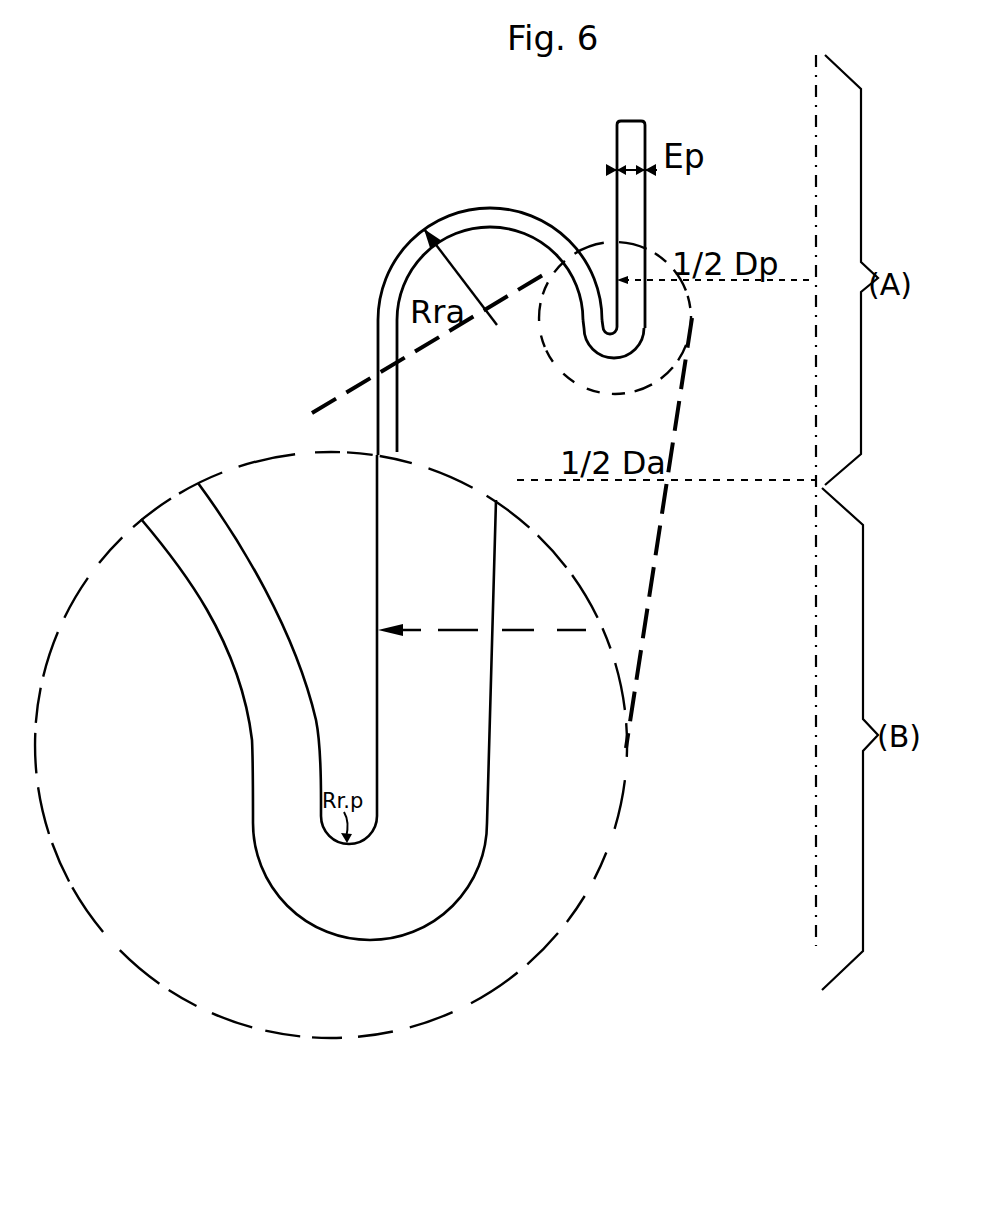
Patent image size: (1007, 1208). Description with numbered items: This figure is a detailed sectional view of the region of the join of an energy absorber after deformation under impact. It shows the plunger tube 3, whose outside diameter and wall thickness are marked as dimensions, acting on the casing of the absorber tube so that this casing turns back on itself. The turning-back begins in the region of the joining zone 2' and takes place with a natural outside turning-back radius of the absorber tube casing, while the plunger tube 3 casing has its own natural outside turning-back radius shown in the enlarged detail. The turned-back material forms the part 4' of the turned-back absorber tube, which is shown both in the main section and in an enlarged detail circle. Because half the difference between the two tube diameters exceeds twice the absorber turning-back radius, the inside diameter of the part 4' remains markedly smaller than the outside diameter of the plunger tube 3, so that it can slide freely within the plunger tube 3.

The joining zone 2' is at (490, 299).
The plunger tube 3 is at (622, 150).
The part of the turned-back absorber tube 4' is at (354, 645).